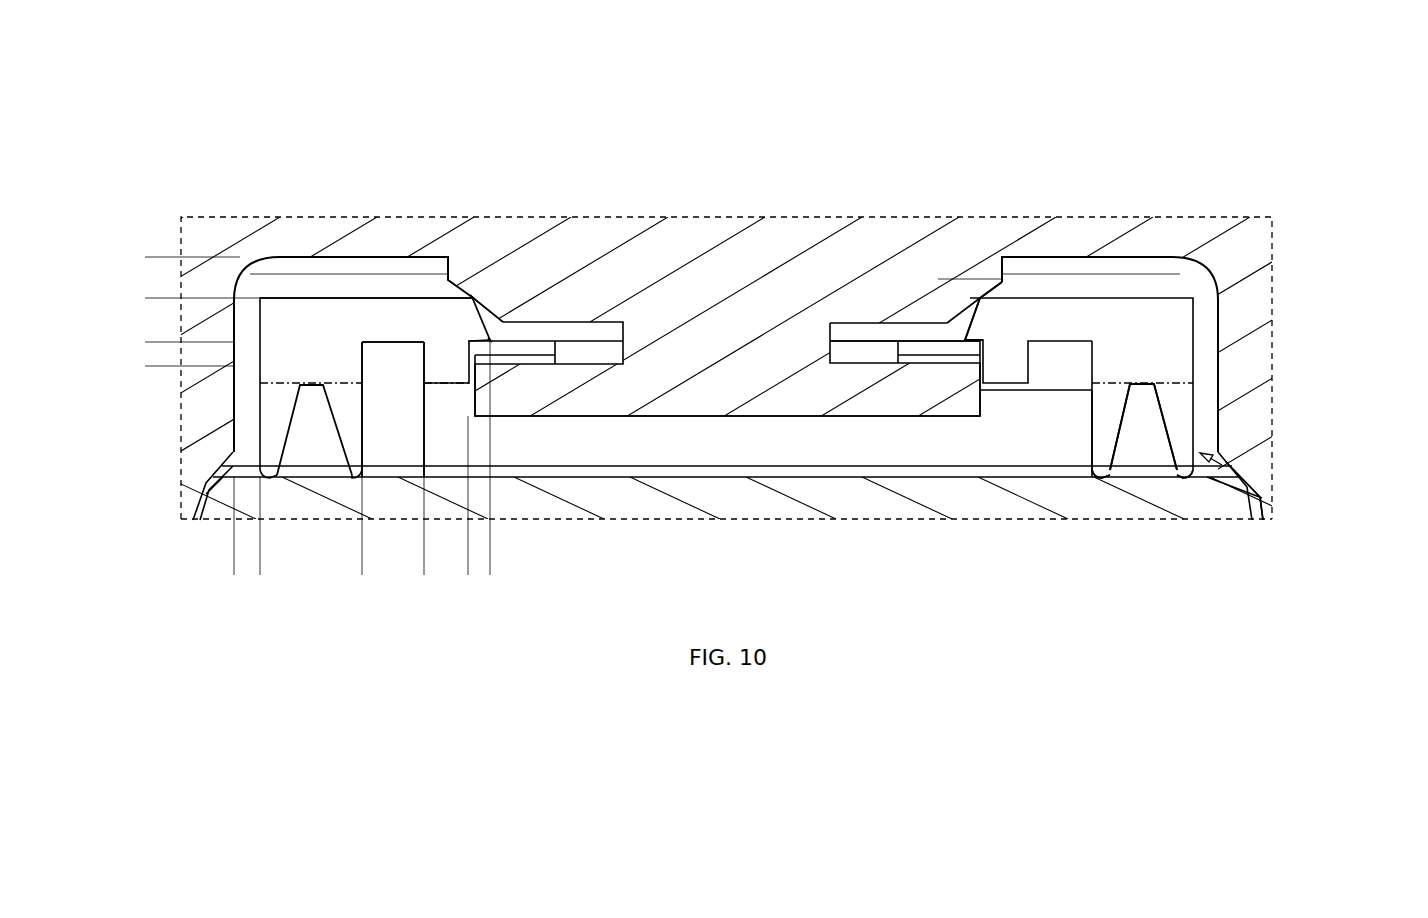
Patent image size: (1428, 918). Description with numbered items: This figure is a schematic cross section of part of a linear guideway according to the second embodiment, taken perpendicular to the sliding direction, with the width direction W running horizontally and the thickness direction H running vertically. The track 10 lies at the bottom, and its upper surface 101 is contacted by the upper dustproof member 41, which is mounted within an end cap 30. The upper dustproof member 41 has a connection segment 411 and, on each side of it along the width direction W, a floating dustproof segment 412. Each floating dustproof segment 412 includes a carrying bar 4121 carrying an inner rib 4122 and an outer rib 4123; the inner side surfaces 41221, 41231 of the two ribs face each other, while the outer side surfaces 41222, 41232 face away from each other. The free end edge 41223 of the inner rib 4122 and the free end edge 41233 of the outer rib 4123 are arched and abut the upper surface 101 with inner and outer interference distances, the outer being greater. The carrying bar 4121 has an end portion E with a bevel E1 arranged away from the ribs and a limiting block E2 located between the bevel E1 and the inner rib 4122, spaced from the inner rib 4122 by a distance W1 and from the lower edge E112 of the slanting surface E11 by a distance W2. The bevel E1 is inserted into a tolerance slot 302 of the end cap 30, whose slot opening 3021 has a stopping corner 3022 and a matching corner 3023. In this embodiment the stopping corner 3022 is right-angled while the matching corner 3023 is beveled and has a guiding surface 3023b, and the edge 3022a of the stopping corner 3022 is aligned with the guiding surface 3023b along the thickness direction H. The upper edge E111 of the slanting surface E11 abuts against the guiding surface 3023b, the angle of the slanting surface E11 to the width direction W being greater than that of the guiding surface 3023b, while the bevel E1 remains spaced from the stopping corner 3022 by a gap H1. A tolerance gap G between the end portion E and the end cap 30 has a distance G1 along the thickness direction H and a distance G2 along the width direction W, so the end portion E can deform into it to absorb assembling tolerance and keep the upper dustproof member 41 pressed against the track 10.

The track 10 is at (729, 514).
The upper surface 101 is at (680, 474).
The end cap 30 is at (740, 222).
The tolerance slot 302 is at (842, 325).
The slot opening 3021 is at (955, 574).
The stopping corner 3022 is at (497, 385).
The edge of the stopping corner 3022a is at (990, 356).
The matching corner 3023 is at (473, 296).
The guiding surface 3023b is at (1010, 290).
The upper dustproof member 41 is at (1340, 83).
The connection segment 411 is at (868, 333).
The floating dustproof segment 412 is at (92, 390).
The carrying bar 4121 is at (280, 373).
The inner rib 4122 is at (350, 410).
The outer rib 4123 is at (270, 442).
The inner side surface of the inner rib 41221 is at (1122, 447).
The outer side surface of the inner rib 41222 is at (1085, 432).
The free end edge of the inner rib 41223 is at (1100, 478).
The inner side surface of the outer rib 41231 is at (1160, 455).
The outer side surface of the outer rib 41232 is at (1262, 498).
The free end edge of the outer rib 41233 is at (1185, 477).
The end portion E is at (363, 303).
The bevel E1 is at (475, 326).
The slanting surface E11 is at (490, 308).
The upper edge of the slanting surface E111 is at (480, 287).
The lower edge of the slanting surface E112 is at (500, 333).
The limiting block E2 is at (433, 372).
The tolerance gap G is at (307, 278).
The distance of the tolerance gap along the thickness direction G1 is at (150, 257).
The distance of the tolerance gap along the width direction G2 is at (260, 568).
The thickness direction H is at (130, 500).
The gap H1 is at (150, 318).
The width direction W is at (170, 633).
The distance between limiting block and inner rib W1 is at (362, 568).
The distance between limiting block and lower edge W2 is at (440, 568).